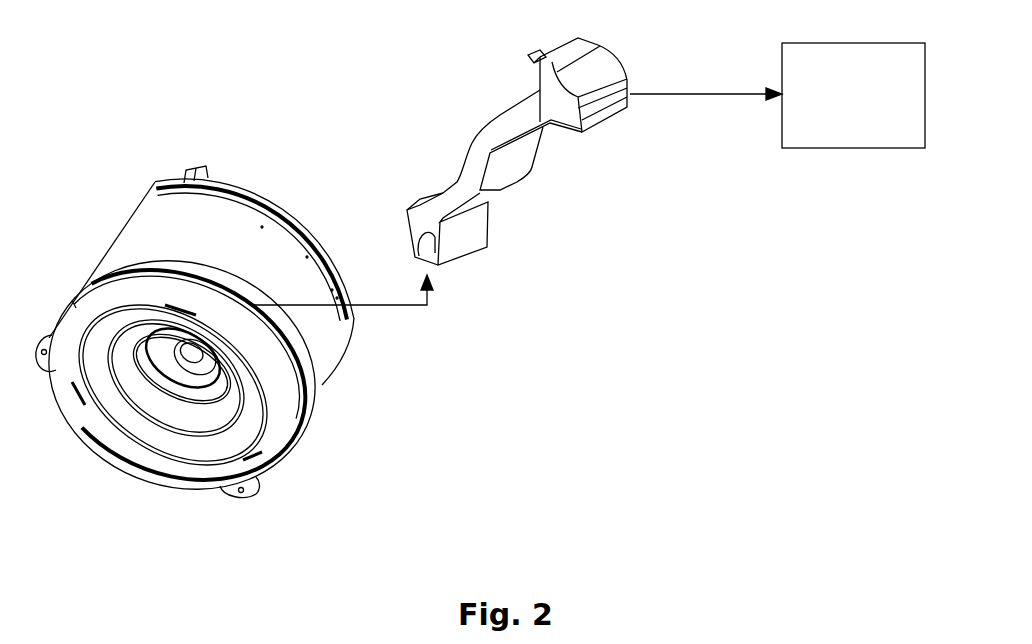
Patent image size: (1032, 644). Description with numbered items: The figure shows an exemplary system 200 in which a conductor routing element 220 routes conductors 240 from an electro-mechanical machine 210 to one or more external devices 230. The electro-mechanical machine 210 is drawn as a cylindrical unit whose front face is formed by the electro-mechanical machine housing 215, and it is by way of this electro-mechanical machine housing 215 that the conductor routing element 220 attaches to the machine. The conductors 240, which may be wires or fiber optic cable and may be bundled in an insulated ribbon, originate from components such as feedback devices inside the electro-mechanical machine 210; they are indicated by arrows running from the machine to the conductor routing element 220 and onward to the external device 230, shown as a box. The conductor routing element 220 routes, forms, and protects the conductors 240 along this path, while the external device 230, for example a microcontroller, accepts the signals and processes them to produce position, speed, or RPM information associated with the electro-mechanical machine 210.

The system 200 is at (646, 326).
The electro-mechanical machine 210 is at (112, 222).
The electro-mechanical machine housing 215 is at (268, 483).
The conductor routing element 220 is at (505, 113).
The external device 230 is at (853, 95).
The conductors 240 is at (403, 302).